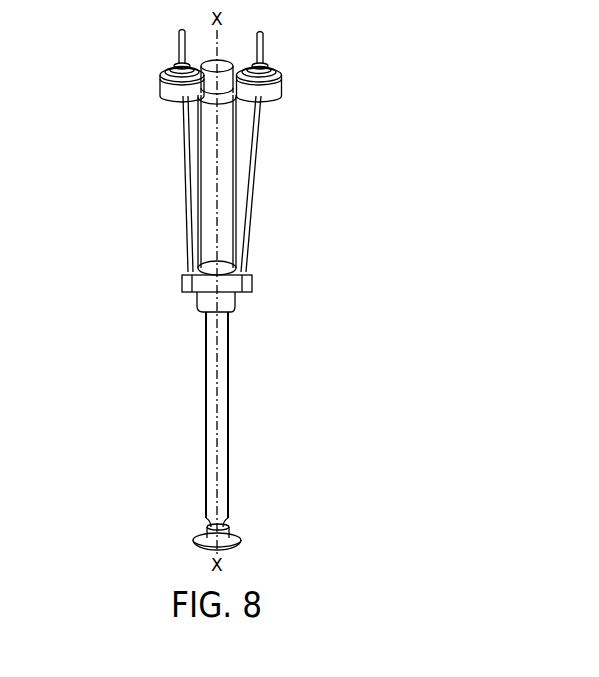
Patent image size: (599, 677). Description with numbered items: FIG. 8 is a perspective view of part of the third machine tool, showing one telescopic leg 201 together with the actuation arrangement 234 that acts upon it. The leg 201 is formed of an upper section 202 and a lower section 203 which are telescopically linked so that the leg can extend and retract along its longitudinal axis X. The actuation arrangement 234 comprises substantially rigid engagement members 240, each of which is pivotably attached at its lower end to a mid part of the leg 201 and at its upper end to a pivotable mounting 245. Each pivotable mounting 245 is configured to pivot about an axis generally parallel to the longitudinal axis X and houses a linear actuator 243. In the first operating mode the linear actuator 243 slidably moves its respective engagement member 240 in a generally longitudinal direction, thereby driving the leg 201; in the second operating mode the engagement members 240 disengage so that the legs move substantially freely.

The leg 201 is at (357, 269).
The probe body 202 is at (248, 200).
The probe rod 203 is at (229, 437).
The actuation arrangement 234 is at (309, 96).
The engagement member 240 is at (184, 163).
The linear actuator 243 is at (172, 63).
The pivotable mounting 245 is at (160, 88).